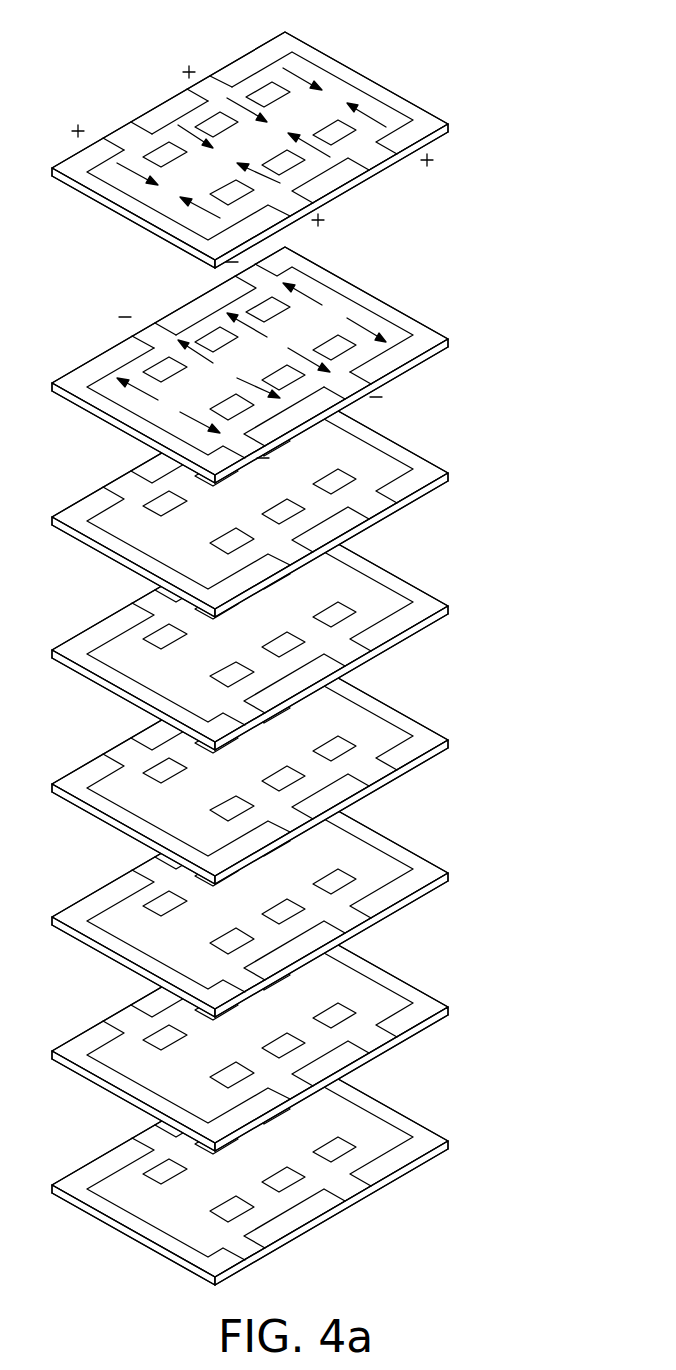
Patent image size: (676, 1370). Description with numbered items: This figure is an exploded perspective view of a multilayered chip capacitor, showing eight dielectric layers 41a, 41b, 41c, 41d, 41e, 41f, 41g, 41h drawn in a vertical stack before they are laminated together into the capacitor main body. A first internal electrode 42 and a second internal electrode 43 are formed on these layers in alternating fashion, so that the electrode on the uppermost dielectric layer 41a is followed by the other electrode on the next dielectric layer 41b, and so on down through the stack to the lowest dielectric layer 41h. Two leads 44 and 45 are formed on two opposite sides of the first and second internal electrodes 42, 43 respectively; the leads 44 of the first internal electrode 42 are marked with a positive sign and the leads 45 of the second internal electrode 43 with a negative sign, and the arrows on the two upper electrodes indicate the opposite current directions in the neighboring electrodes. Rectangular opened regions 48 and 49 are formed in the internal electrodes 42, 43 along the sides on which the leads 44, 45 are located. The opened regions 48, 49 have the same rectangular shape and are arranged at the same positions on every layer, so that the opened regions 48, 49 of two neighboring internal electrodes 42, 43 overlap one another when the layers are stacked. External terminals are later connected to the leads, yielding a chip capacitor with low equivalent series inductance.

The dielectric layer 41a is at (296, 134).
The dielectric layer 41b is at (291, 354).
The dielectric layer 41c is at (450, 474).
The dielectric layer 41d is at (450, 607).
The dielectric layer 41e is at (450, 741).
The dielectric layer 41f is at (450, 874).
The dielectric layer 41g is at (450, 1008).
The dielectric layer 41h is at (450, 1142).
The first internal electrode 42 is at (234, 124).
The second internal electrode 43 is at (247, 345).
The lead 44 is at (212, 78).
The lead 45 is at (150, 335).
The opened region 48 is at (160, 156).
The opened region 49 is at (158, 377).